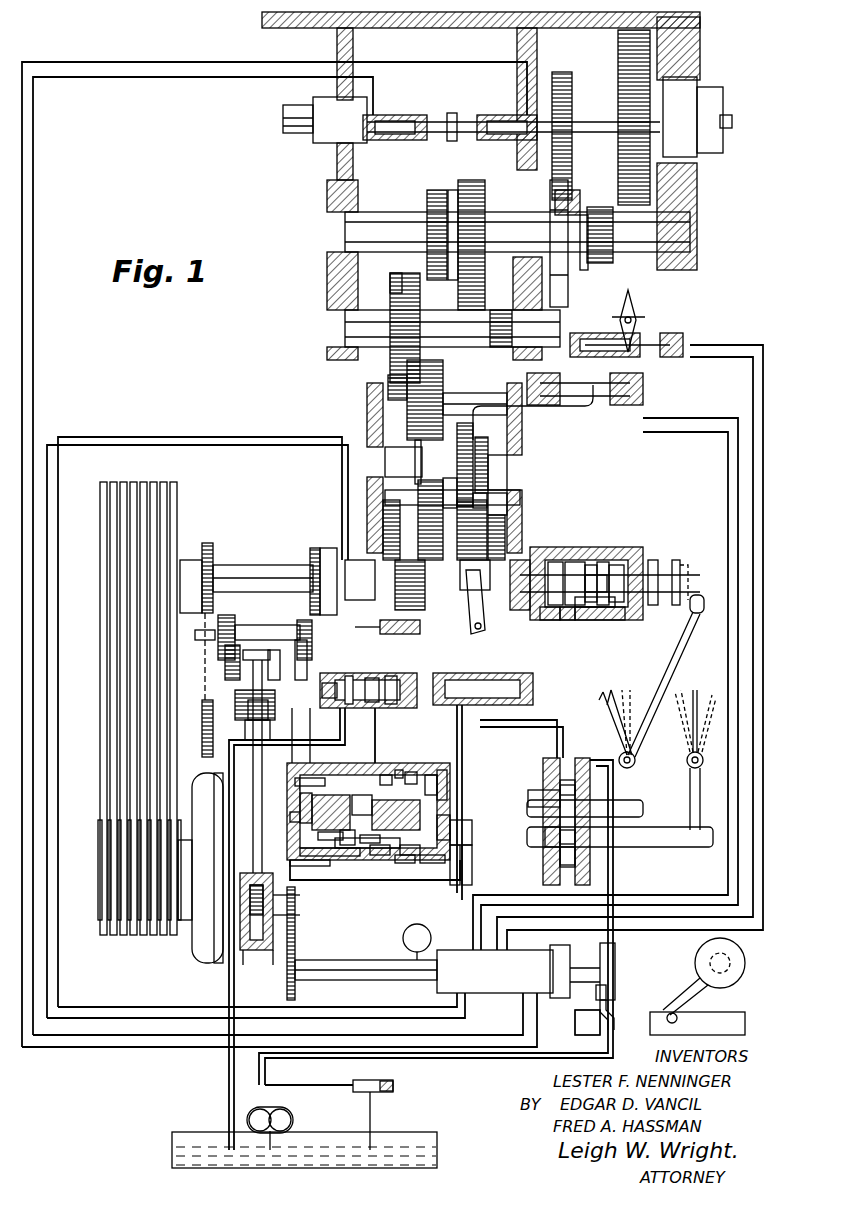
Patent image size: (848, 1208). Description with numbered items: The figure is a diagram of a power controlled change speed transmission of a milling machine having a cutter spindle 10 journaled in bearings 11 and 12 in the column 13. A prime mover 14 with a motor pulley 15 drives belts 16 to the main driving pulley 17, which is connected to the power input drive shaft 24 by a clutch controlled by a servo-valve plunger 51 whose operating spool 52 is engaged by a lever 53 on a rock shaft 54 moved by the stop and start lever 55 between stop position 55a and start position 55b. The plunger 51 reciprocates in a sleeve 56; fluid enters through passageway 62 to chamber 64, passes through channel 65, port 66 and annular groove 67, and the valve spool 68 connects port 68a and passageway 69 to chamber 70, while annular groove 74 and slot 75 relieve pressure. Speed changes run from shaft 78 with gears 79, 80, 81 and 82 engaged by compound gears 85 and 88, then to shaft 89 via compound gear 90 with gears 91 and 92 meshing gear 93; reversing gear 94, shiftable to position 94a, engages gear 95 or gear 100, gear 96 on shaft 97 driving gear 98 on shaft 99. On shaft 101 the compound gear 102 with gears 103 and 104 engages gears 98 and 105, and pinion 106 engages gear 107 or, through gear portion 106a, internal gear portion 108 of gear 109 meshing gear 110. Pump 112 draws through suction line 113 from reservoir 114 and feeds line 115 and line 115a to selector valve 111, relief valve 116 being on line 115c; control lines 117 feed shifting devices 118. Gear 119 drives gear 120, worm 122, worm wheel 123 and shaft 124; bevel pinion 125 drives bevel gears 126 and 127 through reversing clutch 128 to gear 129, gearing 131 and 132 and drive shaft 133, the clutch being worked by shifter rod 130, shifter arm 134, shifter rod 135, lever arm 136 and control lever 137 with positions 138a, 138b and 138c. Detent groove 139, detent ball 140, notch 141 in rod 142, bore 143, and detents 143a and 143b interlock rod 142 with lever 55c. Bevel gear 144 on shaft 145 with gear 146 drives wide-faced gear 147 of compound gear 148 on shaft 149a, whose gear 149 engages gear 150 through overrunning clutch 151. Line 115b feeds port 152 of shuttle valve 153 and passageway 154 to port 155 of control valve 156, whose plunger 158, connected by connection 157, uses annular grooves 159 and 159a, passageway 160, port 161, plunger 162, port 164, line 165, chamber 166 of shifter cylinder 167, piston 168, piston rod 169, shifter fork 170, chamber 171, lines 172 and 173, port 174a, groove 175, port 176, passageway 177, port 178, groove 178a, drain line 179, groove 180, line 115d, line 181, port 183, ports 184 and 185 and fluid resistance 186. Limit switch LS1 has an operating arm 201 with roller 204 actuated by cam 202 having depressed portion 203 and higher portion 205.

The cutter spindle 10 is at (715, 90).
The bearing 11 is at (690, 78).
The bearing 12 is at (323, 140).
The milling machine column 13 is at (700, 28).
The prime mover 14 is at (197, 958).
The motor pulley 15 is at (100, 905).
The belts 16 is at (100, 752).
The main driving pulley 17 is at (100, 497).
The power input drive shaft 24 is at (265, 565).
The servo-valve plunger 51 is at (655, 560).
The operating spool 52 is at (676, 560).
The lever 53 is at (704, 603).
The rock shaft 54 is at (668, 640).
The spindle stop and start operating lever 55 is at (608, 705).
The stop position 55a is at (603, 692).
The start position 55b is at (626, 690).
The lever 55c is at (635, 765).
The sleeve 56 is at (560, 548).
The passageway 62 is at (610, 618).
The chamber 64 is at (617, 560).
The channel 65 is at (596, 560).
The port 66 is at (570, 568).
The annular groove 67 is at (568, 620).
The valve spool 68 is at (600, 548).
The port 68a is at (595, 601).
The passageway 69 is at (548, 620).
The chamber 70 is at (525, 605).
The annular groove 74 is at (596, 584).
The elongated slot 75 is at (605, 555).
The shaft 78 is at (506, 525).
The speed change gear 79 is at (388, 500).
The speed change gear 80 is at (399, 530).
The speed change gear 81 is at (420, 500).
The speed change gear 82 is at (508, 505).
The compound gear 85 is at (425, 600).
The compound gear 88 is at (475, 567).
The shaft 89 is at (522, 470).
The compound gear 90 is at (482, 500).
The gear 91 is at (458, 440).
The gear 92 is at (488, 445).
The gear 93 is at (472, 530).
The reversing gear 94 is at (452, 493).
The reversing gear position 94a is at (385, 450).
The gear 95 is at (407, 385).
The gear 96 is at (443, 395).
The shaft 97 is at (490, 395).
The gear 98 is at (412, 283).
The shaft 99 is at (452, 328).
The gear 100 is at (392, 278).
The shaft 101 is at (385, 215).
The compound gear 102 is at (452, 282).
The gear 103 is at (436, 190).
The gear 104 is at (475, 182).
The gear 105 is at (500, 310).
The pinion 106 is at (600, 210).
The gear portion 106a is at (583, 215).
The gear 107 is at (620, 45).
The internal gear portion 108 is at (556, 198).
The gear 109 is at (558, 308).
The gear 110 is at (561, 75).
The selector valve 111 is at (503, 971).
The fluid pressure pump 112 is at (296, 1110).
The suction line 113 is at (274, 1138).
The reservoir 114 is at (408, 1145).
The line 115 is at (427, 1060).
The line 115a is at (575, 1035).
The line 115b is at (560, 758).
The line 115c is at (376, 722).
The pressure line 115d is at (507, 728).
The fluid pressure relief valve 116 is at (372, 1080).
The fluid pressure control lines 117 is at (34, 397).
The hydraulically actuated shifting devices 118 is at (442, 120).
The gear 119 is at (210, 545).
The gear 120 is at (203, 742).
The worm 122 is at (265, 700).
The worm wheel 123 is at (270, 715).
The shaft 124 is at (265, 745).
The bevel pinion 125 is at (247, 873).
The bevel gear 126 is at (245, 956).
The bevel gear 127 is at (278, 956).
The reversing clutch 128 is at (257, 915).
The gear 129 is at (298, 900).
The shifter rod 130 is at (412, 930).
The gearing 131 is at (298, 918).
The gearing 132 is at (287, 985).
The selector valve drive shaft 133 is at (337, 981).
The shifter arm 134 is at (460, 870).
The shifter rod 135 is at (620, 837).
The lever arm 136 is at (702, 788).
The speed change control lever 137 is at (688, 756).
The neutral position 138a is at (695, 690).
The speed increase position 138b is at (712, 696).
The speed decrease position 138c is at (676, 692).
The detent groove 139 is at (576, 836).
The detent ball 140 is at (545, 835).
The detent notch 141 is at (581, 795).
The shifter rod 142 is at (643, 808).
The bore 143 is at (268, 690).
The ball detent 143a is at (539, 796).
The detent ball 143b is at (560, 855).
The bevel gear 144 is at (305, 620).
The shaft 145 is at (257, 649).
The gear 146 is at (228, 662).
The wide-faced gear 147 is at (232, 625).
The compound gear 148 is at (266, 626).
The gear 149 is at (312, 660).
The shaft 149a is at (198, 640).
The gear 150 is at (314, 548).
The overrunning clutch roller assembly 151 is at (328, 548).
The port 152 is at (386, 775).
The shuttle valve 153 is at (412, 772).
The passageway 154 is at (398, 811).
The port 155 is at (380, 855).
The control valve 156 is at (450, 808).
The connection 157 is at (450, 825).
The plunger 158 is at (462, 845).
The annular groove 159 is at (410, 855).
The annular groove 159a is at (470, 885).
The passageway 160 is at (440, 790).
The port 161 is at (447, 778).
The plunger 162 is at (400, 770).
The port 164 is at (361, 804).
The line 165 is at (336, 735).
The chamber 166 is at (372, 678).
The shifter cylinder 167 is at (392, 676).
The shifter piston 168 is at (350, 675).
The piston rod 169 is at (333, 690).
The shifter fork 170 is at (282, 665).
The chamber 171 is at (314, 735).
The line 172 is at (300, 800).
The line 173 is at (345, 880).
The port 174a is at (380, 829).
The annular groove 175 is at (361, 839).
The port 176 is at (340, 862).
The passageway 177 is at (333, 825).
The port 178 is at (331, 811).
The annular groove 178a is at (350, 778).
The drain line 179 is at (395, 712).
The annular groove 180 is at (440, 674).
The line 181 is at (320, 856).
The port 183 is at (296, 782).
The port 184 is at (411, 878).
The port 185 is at (437, 866).
The fluid resistance 186 is at (367, 834).
The operating arm 201 is at (612, 1012).
The cam 202 is at (615, 952).
The depressed portion 203 is at (690, 995).
The roller 204 is at (606, 990).
The higher portion 205 is at (705, 945).
The limit switch LS1 is at (600, 1030).